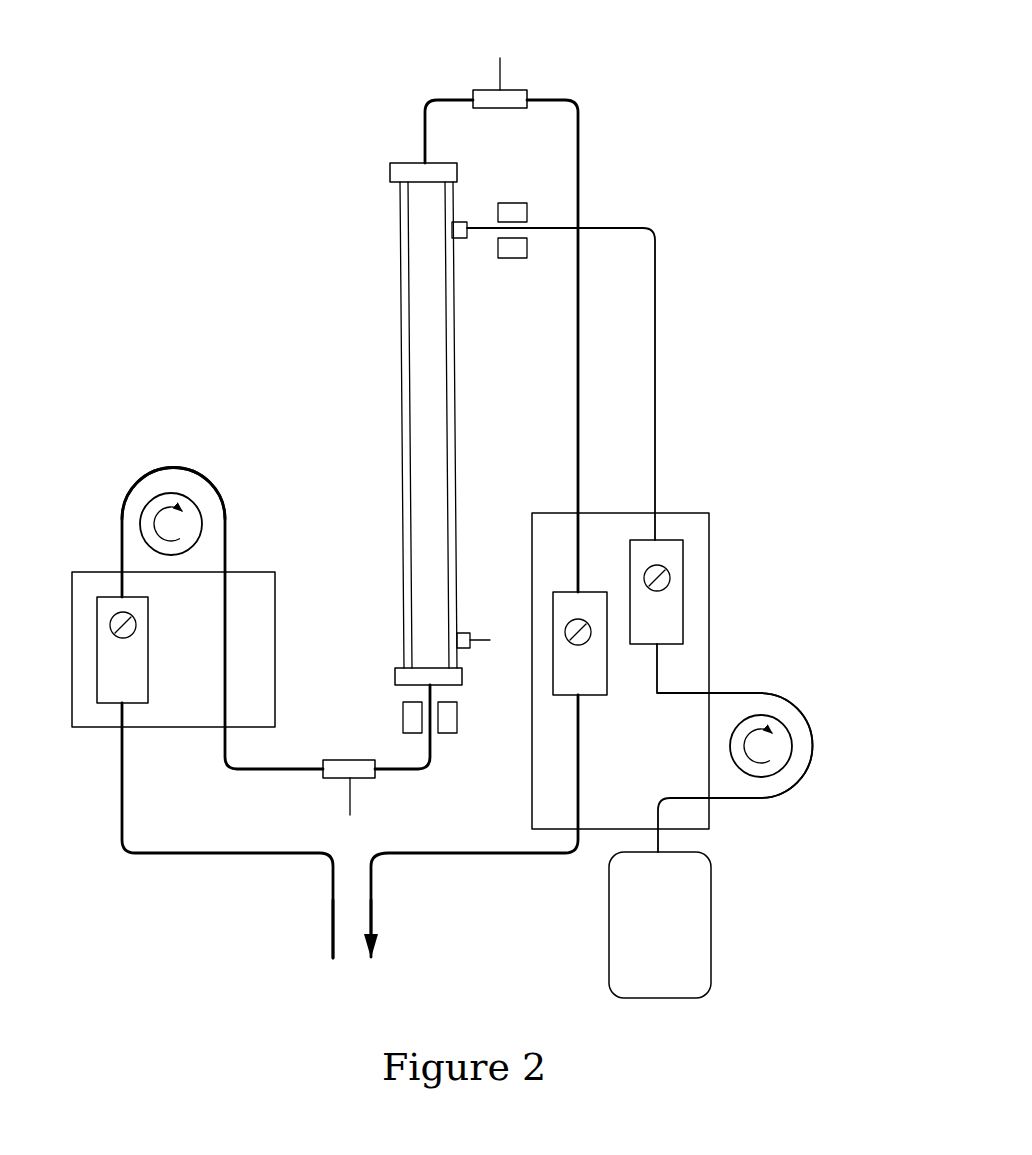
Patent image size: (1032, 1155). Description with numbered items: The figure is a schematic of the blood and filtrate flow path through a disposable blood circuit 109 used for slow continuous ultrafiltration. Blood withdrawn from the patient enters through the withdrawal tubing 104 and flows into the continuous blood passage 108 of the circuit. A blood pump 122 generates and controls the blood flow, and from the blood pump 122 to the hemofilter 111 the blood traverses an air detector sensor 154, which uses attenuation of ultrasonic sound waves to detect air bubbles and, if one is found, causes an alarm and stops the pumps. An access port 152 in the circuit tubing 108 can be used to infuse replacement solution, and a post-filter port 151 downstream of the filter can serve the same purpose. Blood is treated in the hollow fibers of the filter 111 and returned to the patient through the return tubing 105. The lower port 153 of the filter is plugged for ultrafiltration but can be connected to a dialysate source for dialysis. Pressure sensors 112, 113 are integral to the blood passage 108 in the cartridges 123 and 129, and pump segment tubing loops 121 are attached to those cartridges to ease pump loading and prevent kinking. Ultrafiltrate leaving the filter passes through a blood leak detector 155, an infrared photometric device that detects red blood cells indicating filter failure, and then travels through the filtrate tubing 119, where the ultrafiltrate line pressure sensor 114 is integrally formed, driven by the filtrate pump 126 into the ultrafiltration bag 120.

The withdrawal tubing 104 is at (332, 925).
The return tubing 105 is at (374, 903).
The blood fluid passage 108 is at (578, 177).
The disposable blood circuit 109 is at (357, 402).
The hemofilter 111 is at (407, 225).
The pressure sensor 112 is at (97, 670).
The blood return sensor 113 is at (570, 697).
The ultrafiltrate line pressure sensor 114 is at (688, 550).
The filtrate tubing 119 is at (655, 298).
The ultrafiltration bag 120 is at (675, 905).
The pump segment tubing loops 121 is at (767, 693).
The blood pump 122 is at (173, 533).
The cartridge 123 is at (258, 617).
The filtrate pump 126 is at (770, 750).
The cartridge 129 is at (610, 527).
The post-filter port 151 is at (502, 100).
The access port 152 is at (330, 782).
The lower port 153 is at (468, 630).
The air detector sensor 154 is at (402, 720).
The blood leak detector 155 is at (513, 247).